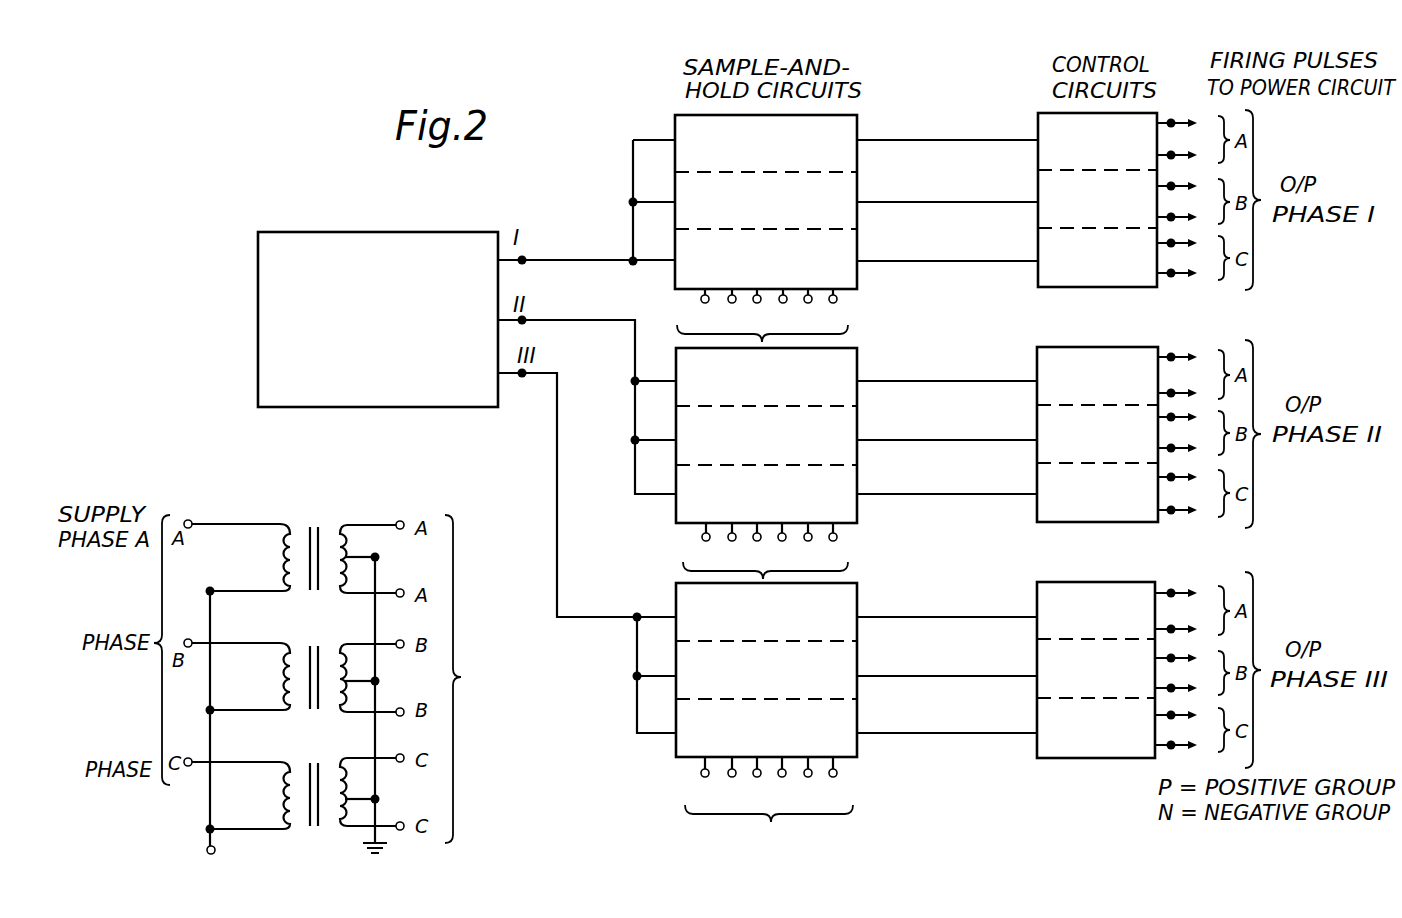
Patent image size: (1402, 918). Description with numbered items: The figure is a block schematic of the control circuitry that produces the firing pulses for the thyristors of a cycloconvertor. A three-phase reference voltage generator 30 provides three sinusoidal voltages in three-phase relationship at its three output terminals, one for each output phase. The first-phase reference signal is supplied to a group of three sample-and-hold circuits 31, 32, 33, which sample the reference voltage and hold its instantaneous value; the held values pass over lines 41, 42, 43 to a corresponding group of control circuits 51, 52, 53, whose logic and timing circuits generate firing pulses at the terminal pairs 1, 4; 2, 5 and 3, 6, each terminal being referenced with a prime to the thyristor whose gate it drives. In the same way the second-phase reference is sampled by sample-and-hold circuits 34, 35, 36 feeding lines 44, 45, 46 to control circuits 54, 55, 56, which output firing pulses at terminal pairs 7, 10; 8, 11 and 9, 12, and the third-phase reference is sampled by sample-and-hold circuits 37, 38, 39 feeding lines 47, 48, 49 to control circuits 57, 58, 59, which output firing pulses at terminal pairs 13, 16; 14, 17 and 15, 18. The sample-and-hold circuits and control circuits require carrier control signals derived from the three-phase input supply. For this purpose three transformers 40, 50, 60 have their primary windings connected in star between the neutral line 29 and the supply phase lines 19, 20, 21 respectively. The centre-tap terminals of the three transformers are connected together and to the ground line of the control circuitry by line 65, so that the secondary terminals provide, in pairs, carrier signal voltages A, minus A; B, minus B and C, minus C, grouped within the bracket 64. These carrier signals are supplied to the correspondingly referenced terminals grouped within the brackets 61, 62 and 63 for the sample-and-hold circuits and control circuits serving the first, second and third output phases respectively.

The 3-phase reference voltage generator 30 is at (355, 232).
The sample-and-hold circuit 31 is at (858, 125).
The sample-and-hold circuit 32 is at (858, 190).
The sample-and-hold circuit 33 is at (858, 248).
The sample-and-hold circuit 34 is at (858, 359).
The sample-and-hold circuit 35 is at (858, 418).
The sample-and-hold circuit 36 is at (858, 480).
The sample-and-hold circuit 37 is at (858, 595).
The sample-and-hold circuit 38 is at (858, 655).
The sample-and-hold circuit 39 is at (858, 717).
The line 41 is at (959, 137).
The line 42 is at (964, 200).
The line 43 is at (968, 260).
The line 44 is at (952, 378).
The line 45 is at (951, 437).
The line 46 is at (951, 493).
The line 47 is at (952, 615).
The line 48 is at (951, 673).
The line 49 is at (951, 732).
The control circuit 51 is at (1048, 113).
The control circuit 52 is at (1097, 199).
The control circuit 53 is at (1068, 289).
The control circuit 54 is at (1048, 347).
The control circuit 55 is at (1097, 434).
The control circuit 56 is at (1072, 525).
The control circuit 57 is at (1120, 582).
The control circuit 58 is at (1096, 668).
The control circuit 59 is at (1055, 760).
The bracket 61 is at (840, 338).
The bracket 62 is at (840, 575).
The bracket 63 is at (824, 818).
The bracket 64 is at (514, 679).
The line 65 is at (367, 849).
The line 19 is at (214, 524).
The line 20 is at (231, 653).
The line 21 is at (231, 773).
The neutral line 29 is at (215, 836).
The transformer 40 is at (322, 535).
The transformer 50 is at (357, 659).
The transformer 60 is at (322, 765).
The firing pulse terminal 1' 1 is at (1172, 121).
The firing pulse terminal 2' 2 is at (1162, 184).
The firing pulse terminal 3' 3 is at (1161, 243).
The firing pulse terminal 4' 4 is at (1160, 153).
The firing pulse terminal 5' 5 is at (1161, 216).
The firing pulse terminal 6' 6 is at (1161, 273).
The firing pulse terminal 7' 7 is at (1172, 355).
The firing pulse terminal 8' 8 is at (1162, 415).
The firing pulse terminal 9' 9 is at (1162, 477).
The firing pulse terminal 10' 10 is at (1162, 391).
The firing pulse terminal 11' 11 is at (1162, 447).
The firing pulse terminal 12' 12 is at (1162, 509).
The firing pulse terminal 13' 13 is at (1170, 591).
The firing pulse terminal 14' 14 is at (1161, 656).
The firing pulse terminal 15' 15 is at (1161, 715).
The firing pulse terminal 16' 16 is at (1161, 627).
The firing pulse terminal 17' 17 is at (1161, 686).
The firing pulse terminal 18' 18 is at (1161, 744).